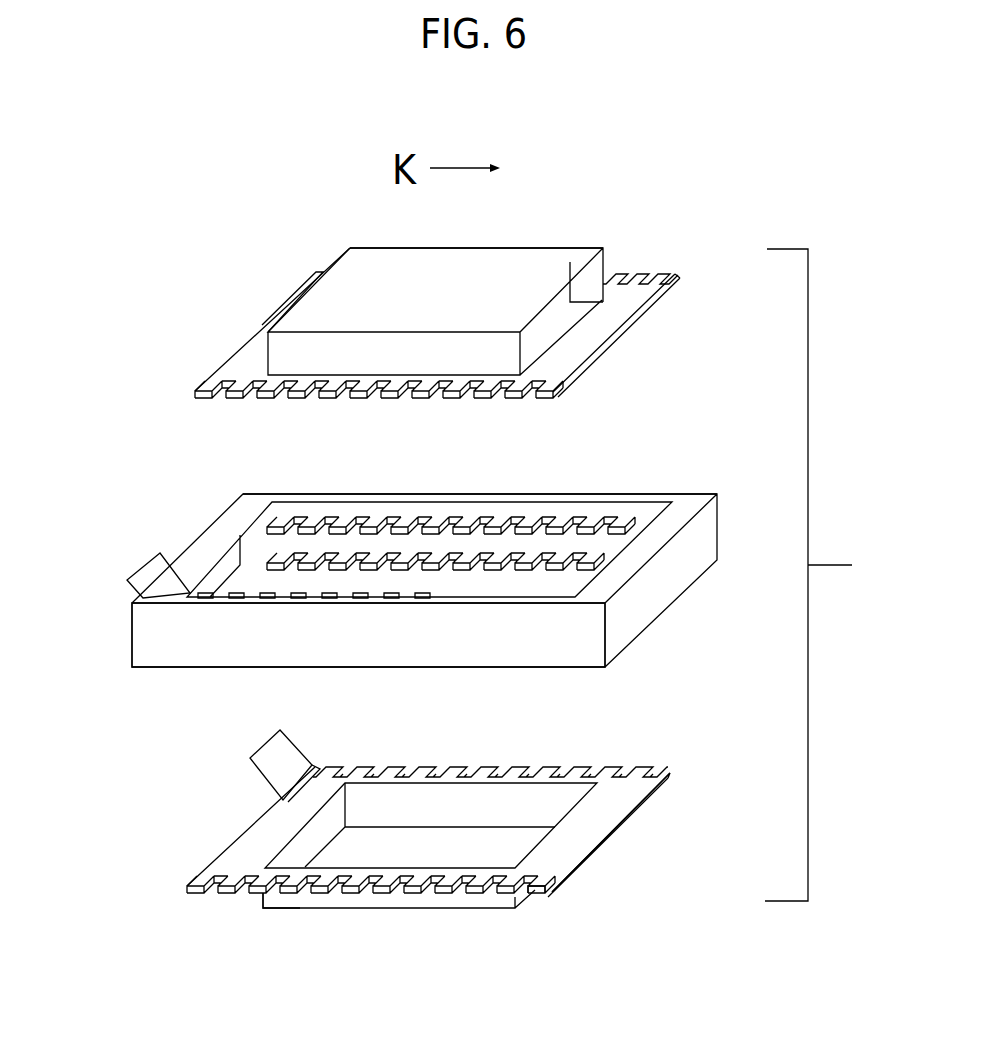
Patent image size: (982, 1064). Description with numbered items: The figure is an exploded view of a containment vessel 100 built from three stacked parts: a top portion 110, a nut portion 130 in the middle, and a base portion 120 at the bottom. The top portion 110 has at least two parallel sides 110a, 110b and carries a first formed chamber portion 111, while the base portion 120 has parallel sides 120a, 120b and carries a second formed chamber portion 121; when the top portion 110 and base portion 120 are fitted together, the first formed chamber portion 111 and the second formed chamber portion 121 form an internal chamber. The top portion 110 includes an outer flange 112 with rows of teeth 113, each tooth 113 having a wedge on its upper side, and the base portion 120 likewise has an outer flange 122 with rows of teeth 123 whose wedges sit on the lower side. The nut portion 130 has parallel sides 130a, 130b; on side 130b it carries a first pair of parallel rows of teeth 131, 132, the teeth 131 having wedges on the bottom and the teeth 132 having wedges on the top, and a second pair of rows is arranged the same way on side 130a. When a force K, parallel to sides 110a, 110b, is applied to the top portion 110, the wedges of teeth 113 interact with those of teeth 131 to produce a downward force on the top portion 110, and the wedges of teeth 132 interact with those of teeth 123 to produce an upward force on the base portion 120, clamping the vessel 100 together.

The containment vessel 100 is at (841, 575).
The top portion 110 is at (422, 284).
The parallel side of top portion 110a is at (300, 352).
The parallel side of top portion 110b is at (537, 248).
The first formed chamber portion 111 is at (365, 268).
The outer flange 112 is at (595, 333).
The teeth 113 is at (552, 398).
The base portion 120 is at (392, 855).
The parallel side of base portion 120a is at (275, 898).
The parallel side of base portion 120b is at (512, 805).
The second formed chamber portion 121 is at (393, 900).
The outer flange 122 is at (572, 835).
The teeth 123 is at (540, 897).
The nut portion 130 is at (373, 598).
The parallel side of nut portion 130a is at (208, 633).
The parallel side of nut portion 130b is at (447, 496).
The teeth of first parallel row 131 is at (272, 517).
The teeth of second parallel row 132 is at (127, 580).